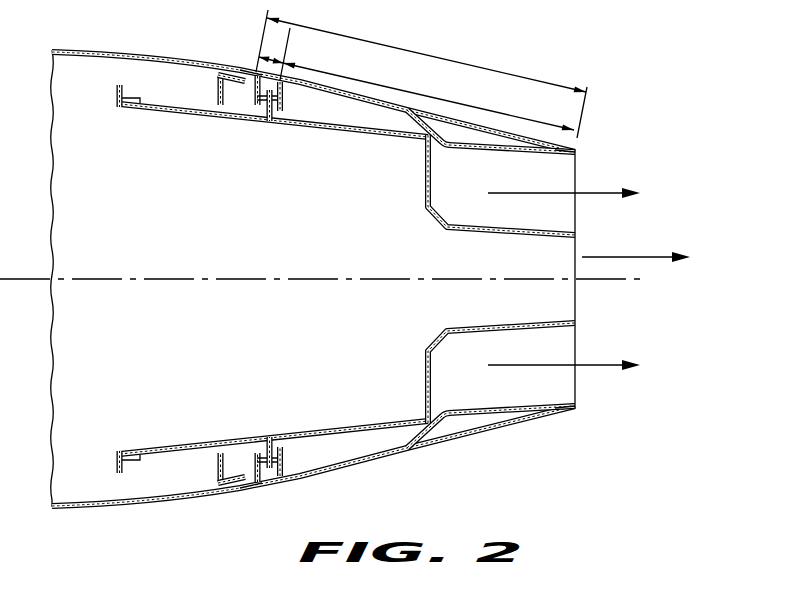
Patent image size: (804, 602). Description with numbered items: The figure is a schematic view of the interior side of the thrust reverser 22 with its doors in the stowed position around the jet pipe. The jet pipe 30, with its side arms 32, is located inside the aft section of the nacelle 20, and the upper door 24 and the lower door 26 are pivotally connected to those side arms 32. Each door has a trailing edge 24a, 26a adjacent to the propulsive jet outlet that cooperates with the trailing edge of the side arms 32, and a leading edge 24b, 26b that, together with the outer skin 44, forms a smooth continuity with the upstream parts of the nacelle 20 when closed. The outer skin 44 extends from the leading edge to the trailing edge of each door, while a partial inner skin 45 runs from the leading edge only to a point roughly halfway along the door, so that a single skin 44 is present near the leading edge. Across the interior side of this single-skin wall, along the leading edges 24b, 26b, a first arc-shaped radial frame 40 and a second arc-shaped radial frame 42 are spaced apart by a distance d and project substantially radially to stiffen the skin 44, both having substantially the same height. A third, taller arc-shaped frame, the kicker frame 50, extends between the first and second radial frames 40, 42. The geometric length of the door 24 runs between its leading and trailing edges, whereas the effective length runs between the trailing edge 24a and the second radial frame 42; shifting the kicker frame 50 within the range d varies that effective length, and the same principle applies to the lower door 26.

The nacelle 20 is at (68, 507).
The thrust reverser 22 is at (401, 48).
The upper door 24 is at (530, 135).
The trailing edge 24a is at (577, 152).
The leading edge 24b is at (253, 72).
The lower door 26 is at (478, 441).
The trailing edge 26a is at (577, 407).
The leading edge 26b is at (252, 490).
The jet pipe 30 is at (207, 443).
The side arms 32 is at (557, 300).
The first arc-shaped radial frame 40 is at (255, 93).
The second arc-shaped radial frame 42 is at (282, 105).
The outer skin 44 is at (383, 457).
The partial inner skin 45 is at (490, 148).
The kicker frame 50 is at (267, 110).